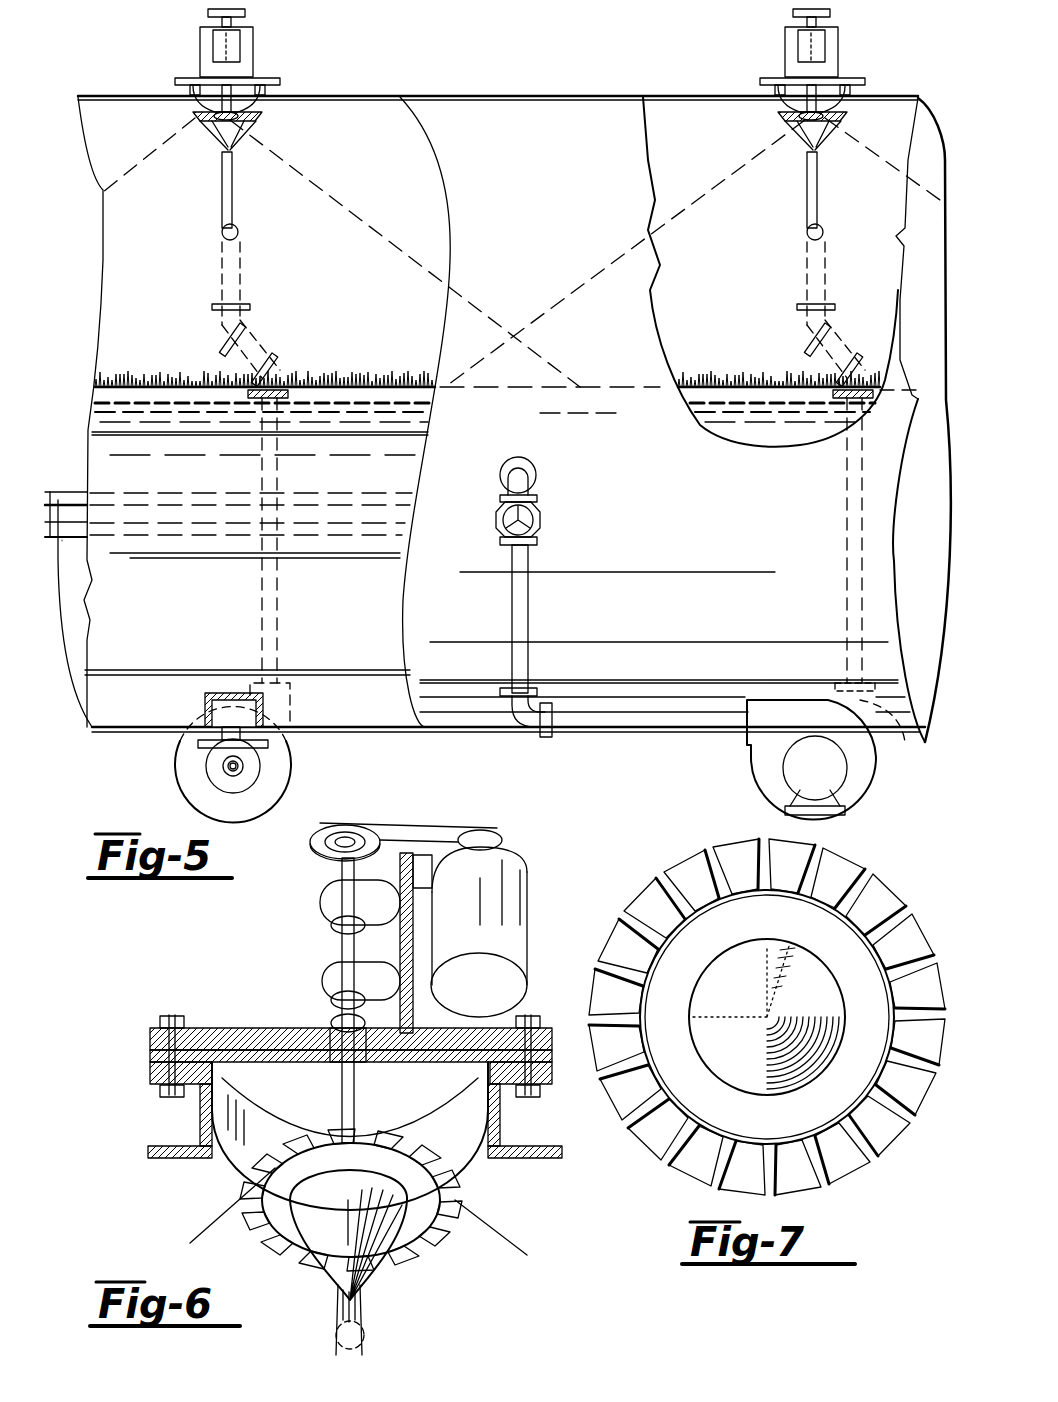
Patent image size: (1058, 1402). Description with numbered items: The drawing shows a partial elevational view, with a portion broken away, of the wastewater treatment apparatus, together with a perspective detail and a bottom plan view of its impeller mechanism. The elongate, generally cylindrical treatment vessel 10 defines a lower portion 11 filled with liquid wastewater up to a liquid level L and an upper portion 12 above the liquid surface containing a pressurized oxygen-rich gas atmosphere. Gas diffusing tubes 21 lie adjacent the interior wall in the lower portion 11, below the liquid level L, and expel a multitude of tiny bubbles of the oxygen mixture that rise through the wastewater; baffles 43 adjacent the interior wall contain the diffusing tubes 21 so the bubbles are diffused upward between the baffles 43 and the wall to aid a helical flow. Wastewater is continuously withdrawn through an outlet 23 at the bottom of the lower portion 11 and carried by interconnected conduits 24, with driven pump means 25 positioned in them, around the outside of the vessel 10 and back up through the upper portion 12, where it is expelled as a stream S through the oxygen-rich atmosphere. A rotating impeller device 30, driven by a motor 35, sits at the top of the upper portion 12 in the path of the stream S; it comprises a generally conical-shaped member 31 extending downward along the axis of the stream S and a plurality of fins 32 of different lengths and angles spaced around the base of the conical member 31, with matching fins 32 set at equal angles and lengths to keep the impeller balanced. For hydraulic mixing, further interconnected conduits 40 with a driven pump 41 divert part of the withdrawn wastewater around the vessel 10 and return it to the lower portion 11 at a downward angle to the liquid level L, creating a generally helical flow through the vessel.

In FIG. 5, the treatment vessel 10 is at (526, 88).
In FIG. 5, the lower portion 11 is at (397, 176).
In FIG. 5, the upper portion 12 is at (380, 716).
In FIG. 5, the gas diffusing tubes 21 is at (48, 492).
In FIG. 5, the outlet 23 is at (232, 695).
In FIG. 5, the interconnected conduits 24 is at (234, 200).
In FIG. 6, the interconnected conduits 24 is at (366, 1343).
In FIG. 5, the driven pump means 25 is at (178, 770).
In FIG. 5, the rotating impeller device 30 is at (494, 132).
In FIG. 6, the rotating impeller device 30 is at (355, 1068).
In FIG. 7, the rotating impeller device 30 is at (767, 994).
In FIG. 5, the conical-shaped member 31 is at (225, 127).
In FIG. 6, the conical-shaped member 31 is at (385, 1225).
In FIG. 7, the conical-shaped member 31 is at (765, 960).
In FIG. 6, the fins 32 is at (315, 1258).
In FIG. 7, the fins 32 is at (878, 920).
In FIG. 5, the motor 35 is at (233, 40).
In FIG. 6, the motor 35 is at (516, 892).
In FIG. 5, the interconnected conduits 40 is at (245, 766).
In FIG. 5, the driven pump 41 is at (850, 772).
In FIG. 5, the baffles 43 is at (118, 631).
In FIG. 5, the stream of wastewater S is at (236, 140).
In FIG. 6, the stream of wastewater S is at (366, 1302).
In FIG. 5, the liquid level L is at (371, 385).